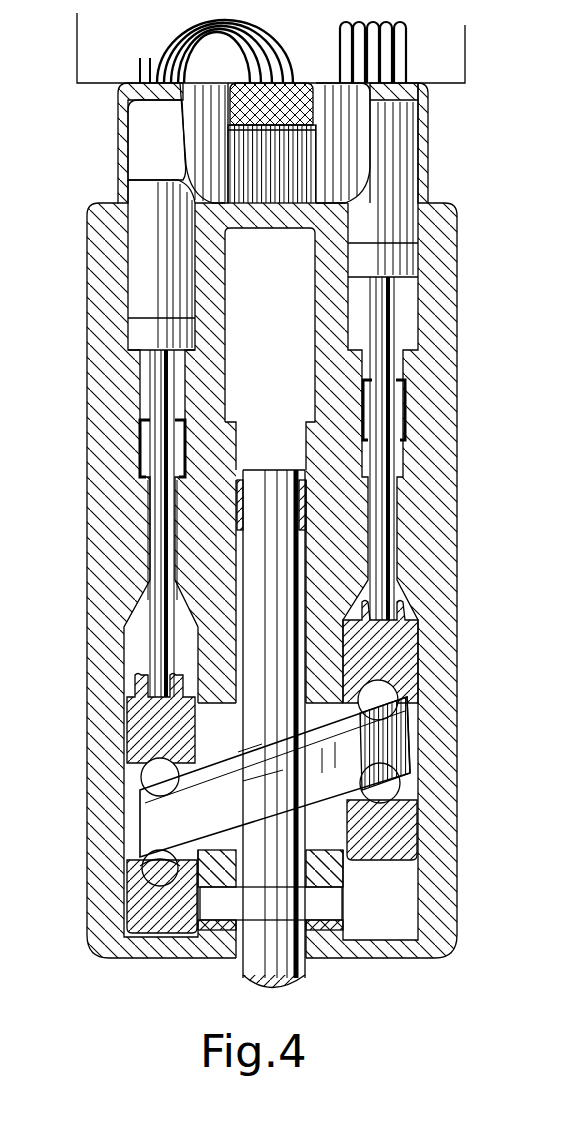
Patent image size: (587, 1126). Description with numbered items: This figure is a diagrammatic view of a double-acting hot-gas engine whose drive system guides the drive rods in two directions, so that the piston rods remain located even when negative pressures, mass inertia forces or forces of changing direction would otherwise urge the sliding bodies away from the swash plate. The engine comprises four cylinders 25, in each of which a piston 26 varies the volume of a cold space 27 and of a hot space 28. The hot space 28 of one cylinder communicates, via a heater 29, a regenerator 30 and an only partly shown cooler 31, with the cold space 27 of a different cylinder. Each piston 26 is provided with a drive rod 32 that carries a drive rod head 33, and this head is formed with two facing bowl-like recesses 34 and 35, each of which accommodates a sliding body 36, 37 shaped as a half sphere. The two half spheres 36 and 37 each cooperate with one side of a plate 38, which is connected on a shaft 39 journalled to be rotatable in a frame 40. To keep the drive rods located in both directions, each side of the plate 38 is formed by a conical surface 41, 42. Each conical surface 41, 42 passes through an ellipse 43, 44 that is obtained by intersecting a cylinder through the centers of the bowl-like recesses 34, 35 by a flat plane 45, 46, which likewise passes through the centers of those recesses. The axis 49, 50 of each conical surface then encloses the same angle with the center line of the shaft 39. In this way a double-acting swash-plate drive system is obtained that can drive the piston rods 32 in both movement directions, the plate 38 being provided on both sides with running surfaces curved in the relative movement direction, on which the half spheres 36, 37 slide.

The cylinder 25 is at (123, 162).
The piston 26 is at (158, 265).
The cold space 27 is at (145, 373).
The hot space 28 is at (160, 137).
The heater 29 is at (173, 53).
The regenerator 30 is at (250, 113).
The cooler 31 is at (270, 178).
The drive rod 32 is at (162, 518).
The drive rod head 33 is at (143, 722).
The bowl-like recess 34 is at (148, 768).
The bowl-like recess 35 is at (165, 870).
The sliding body 36 is at (145, 775).
The sliding body 37 is at (143, 870).
The plate 38 is at (420, 727).
The shaft 39 is at (350, 870).
The frame 40 is at (438, 915).
The conical surface 41 is at (418, 640).
The conical surface 42 is at (390, 817).
The ellipse 43 is at (340, 752).
The ellipse 44 is at (275, 770).
The flat plane 45 is at (413, 700).
The flat plane 46 is at (418, 760).
The axis of conical surface 49 is at (253, 745).
The axis of conical surface 50 is at (270, 837).